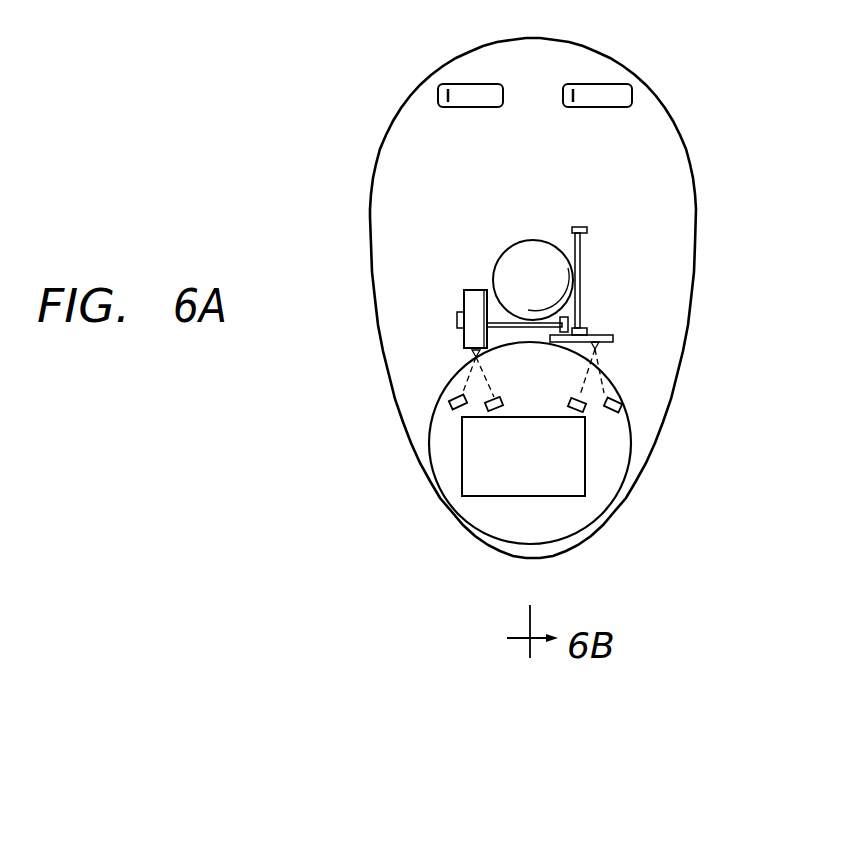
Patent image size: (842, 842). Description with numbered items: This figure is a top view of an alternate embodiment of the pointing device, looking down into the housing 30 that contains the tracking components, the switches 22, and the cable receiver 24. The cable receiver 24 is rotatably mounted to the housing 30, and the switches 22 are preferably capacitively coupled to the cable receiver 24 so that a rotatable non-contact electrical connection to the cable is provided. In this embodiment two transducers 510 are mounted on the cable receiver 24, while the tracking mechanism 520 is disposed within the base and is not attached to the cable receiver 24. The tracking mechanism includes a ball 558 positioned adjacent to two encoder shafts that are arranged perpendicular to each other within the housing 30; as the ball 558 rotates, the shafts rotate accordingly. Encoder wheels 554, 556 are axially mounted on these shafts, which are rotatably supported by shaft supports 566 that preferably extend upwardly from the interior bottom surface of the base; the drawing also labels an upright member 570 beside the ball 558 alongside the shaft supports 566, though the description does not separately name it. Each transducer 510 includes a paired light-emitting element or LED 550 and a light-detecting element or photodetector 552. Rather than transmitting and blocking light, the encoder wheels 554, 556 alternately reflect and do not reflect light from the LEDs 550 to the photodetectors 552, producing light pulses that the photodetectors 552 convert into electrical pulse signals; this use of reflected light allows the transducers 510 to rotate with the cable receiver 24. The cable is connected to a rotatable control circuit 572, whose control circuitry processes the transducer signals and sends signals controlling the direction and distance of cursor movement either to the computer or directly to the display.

The switch 22 is at (460, 83).
The housing 30 is at (647, 75).
The cable receiver 24 is at (627, 385).
The ball 558 is at (512, 247).
The tracking mechanism 520 is at (492, 288).
The encoder wheel 556 is at (463, 298).
The shaft support 566 is at (457, 318).
The shaft 570 is at (580, 267).
The encoder wheel 554 is at (613, 335).
The transducer 510 is at (473, 390).
The photodetector 552 is at (458, 407).
The LED 550 is at (497, 410).
The rotatable control circuit 572 is at (568, 477).